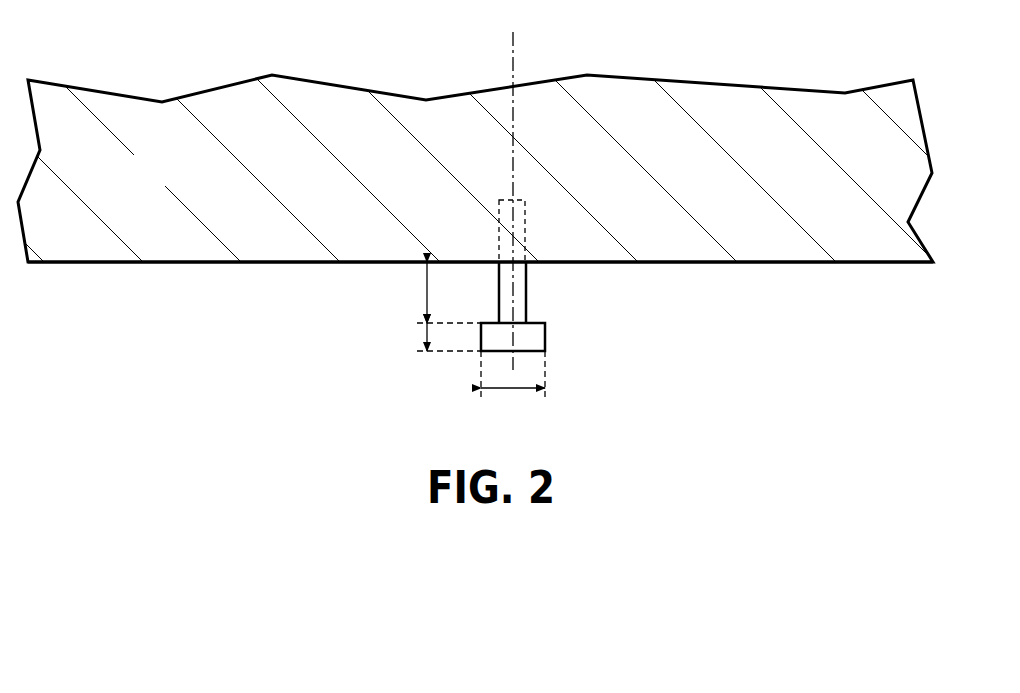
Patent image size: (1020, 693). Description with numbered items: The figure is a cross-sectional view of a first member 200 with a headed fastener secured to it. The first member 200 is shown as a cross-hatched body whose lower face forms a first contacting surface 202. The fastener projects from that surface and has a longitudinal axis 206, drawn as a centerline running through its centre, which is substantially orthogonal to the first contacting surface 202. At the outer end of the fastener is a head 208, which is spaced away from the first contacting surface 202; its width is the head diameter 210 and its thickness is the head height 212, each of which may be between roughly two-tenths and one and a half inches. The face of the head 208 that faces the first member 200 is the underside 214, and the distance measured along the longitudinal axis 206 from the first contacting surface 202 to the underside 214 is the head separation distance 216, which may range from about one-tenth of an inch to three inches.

The first member 200 is at (148, 190).
The first contacting surface 202 is at (760, 263).
The longitudinal axis 206 is at (512, 58).
The head 208 is at (537, 353).
The head diameter 210 is at (513, 389).
The head height 212 is at (425, 340).
The underside of the head 214 is at (535, 322).
The head separation distance 216 is at (425, 292).